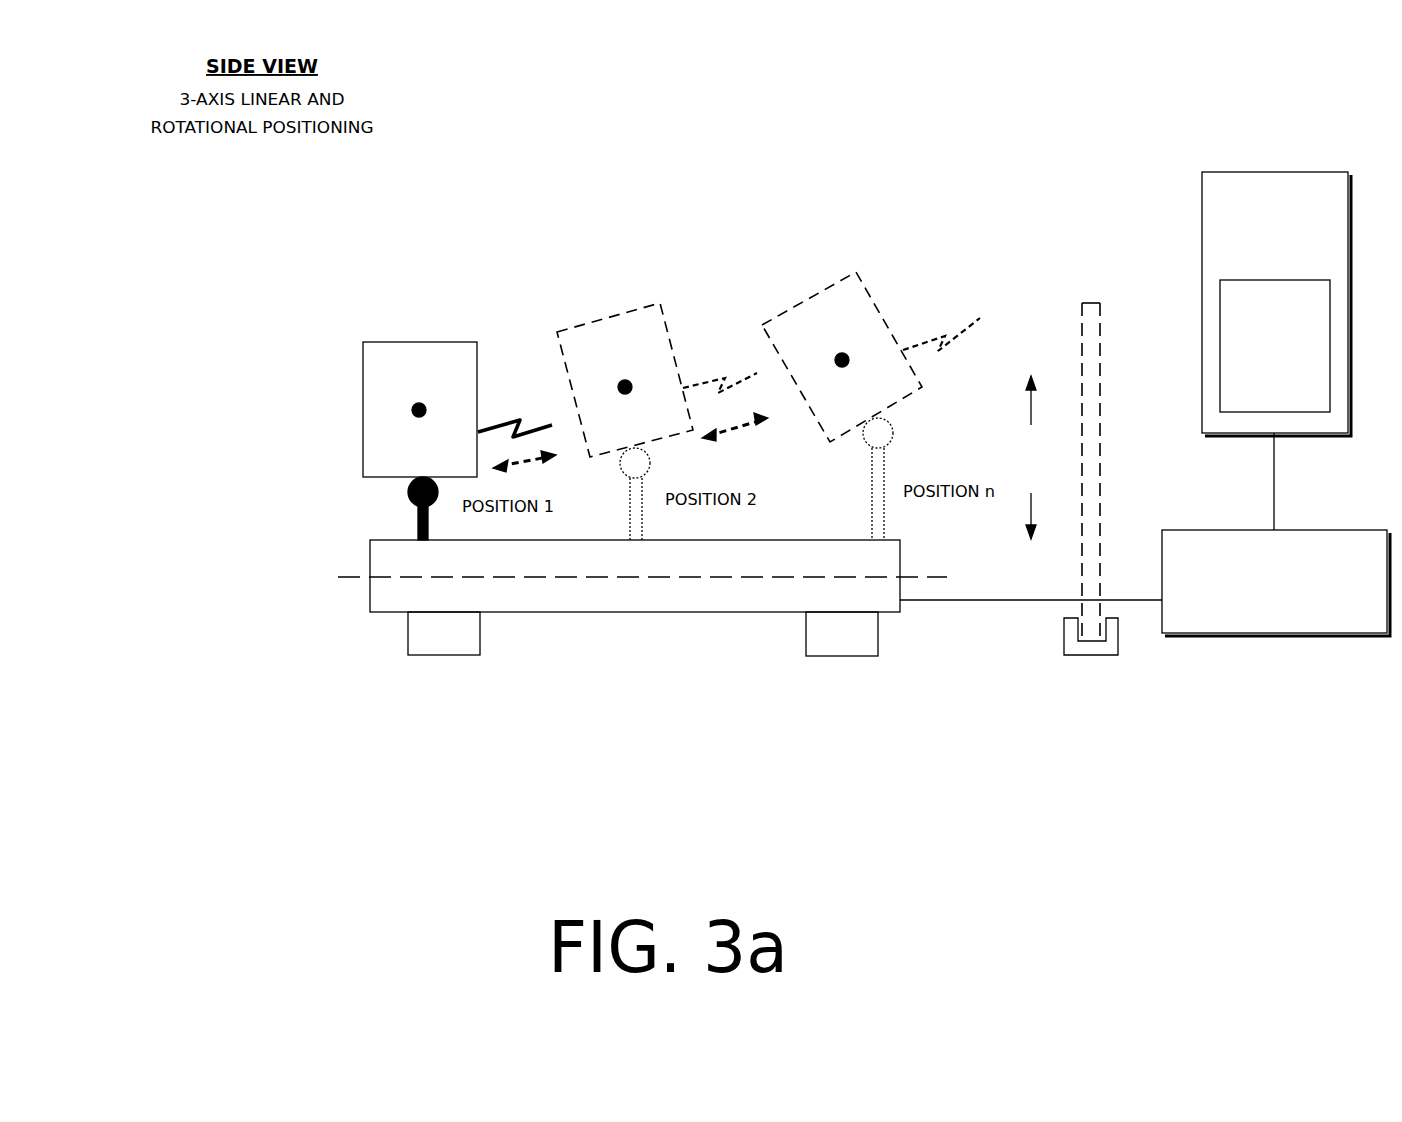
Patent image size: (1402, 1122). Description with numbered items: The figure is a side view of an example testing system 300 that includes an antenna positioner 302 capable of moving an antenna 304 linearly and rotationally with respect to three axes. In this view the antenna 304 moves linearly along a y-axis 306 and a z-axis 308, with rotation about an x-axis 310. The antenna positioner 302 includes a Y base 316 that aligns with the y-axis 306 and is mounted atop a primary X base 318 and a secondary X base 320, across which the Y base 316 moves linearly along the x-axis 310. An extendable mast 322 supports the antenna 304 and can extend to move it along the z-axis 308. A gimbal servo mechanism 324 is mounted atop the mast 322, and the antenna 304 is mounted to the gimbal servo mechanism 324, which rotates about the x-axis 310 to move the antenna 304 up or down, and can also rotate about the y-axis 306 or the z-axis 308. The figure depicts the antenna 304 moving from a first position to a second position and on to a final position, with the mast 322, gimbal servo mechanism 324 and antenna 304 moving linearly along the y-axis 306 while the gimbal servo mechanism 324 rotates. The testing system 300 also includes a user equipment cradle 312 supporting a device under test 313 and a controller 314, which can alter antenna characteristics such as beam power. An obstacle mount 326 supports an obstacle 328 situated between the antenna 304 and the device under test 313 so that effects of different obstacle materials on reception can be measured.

The testing system 300 is at (1054, 118).
The antenna positioner 302 is at (358, 617).
The antenna 304 is at (375, 343).
The y-axis 306 is at (363, 580).
The z-axis 308 is at (1045, 457).
The x-axis 310 is at (424, 402).
The user equipment (UE) cradle 312 is at (1276, 304).
The device under test (DUT) 313 is at (1275, 346).
The controller 314 is at (1276, 583).
The Y base 316 is at (643, 614).
The primary X base 318 is at (438, 657).
The secondary X base 320 is at (880, 633).
The extendable mast 322 is at (418, 527).
The gimbal servo mechanism 324 is at (423, 490).
The obstacle mount 326 is at (1118, 637).
The obstacle 328 is at (1099, 324).